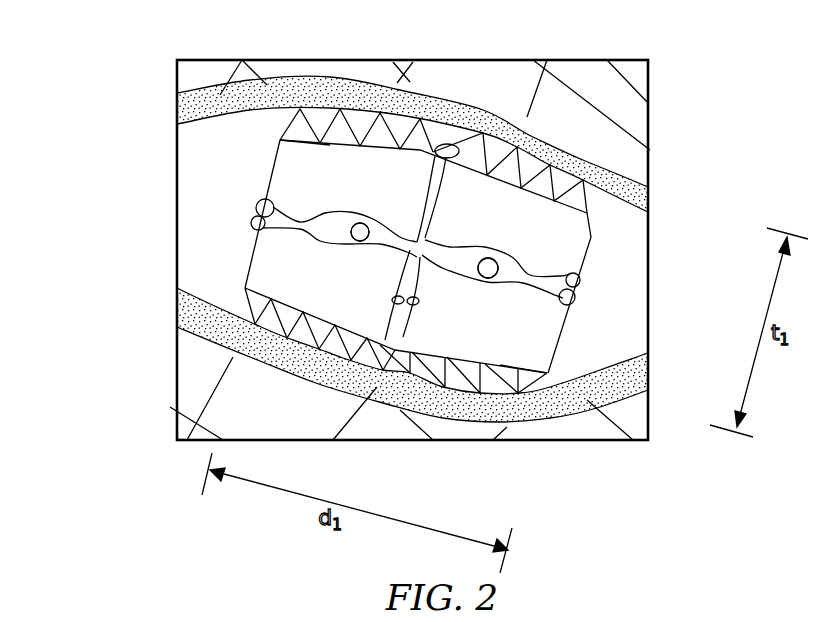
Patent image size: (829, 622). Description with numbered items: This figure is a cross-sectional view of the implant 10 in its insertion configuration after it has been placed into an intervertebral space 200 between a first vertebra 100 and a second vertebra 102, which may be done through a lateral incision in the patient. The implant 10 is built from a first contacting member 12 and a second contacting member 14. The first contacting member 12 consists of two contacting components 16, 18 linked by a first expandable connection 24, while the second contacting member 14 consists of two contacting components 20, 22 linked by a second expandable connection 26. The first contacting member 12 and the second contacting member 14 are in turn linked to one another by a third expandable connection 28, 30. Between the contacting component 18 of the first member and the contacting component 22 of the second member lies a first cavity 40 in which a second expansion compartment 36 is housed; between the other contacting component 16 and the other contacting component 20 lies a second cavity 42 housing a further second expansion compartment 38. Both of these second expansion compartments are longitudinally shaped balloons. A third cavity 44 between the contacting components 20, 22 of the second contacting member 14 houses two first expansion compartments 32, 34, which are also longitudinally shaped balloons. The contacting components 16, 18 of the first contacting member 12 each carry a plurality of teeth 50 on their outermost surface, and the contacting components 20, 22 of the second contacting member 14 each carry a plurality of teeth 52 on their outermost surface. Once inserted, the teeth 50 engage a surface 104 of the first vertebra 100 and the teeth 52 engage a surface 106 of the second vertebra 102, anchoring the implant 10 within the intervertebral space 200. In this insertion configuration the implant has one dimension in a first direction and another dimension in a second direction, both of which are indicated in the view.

The intervertebral space 200 is at (126, 139).
The implant 10 is at (185, 213).
The first contacting member 12 is at (612, 237).
The second contacting member 14 is at (576, 332).
The contacting component 16 is at (556, 235).
The contacting component 18 is at (300, 168).
The contacting component 20 is at (526, 348).
The contacting component 22 is at (263, 258).
The first expandable connection 24 is at (447, 143).
The second expandable connection 26 is at (392, 358).
The third expandable connection 28 is at (578, 293).
The third expandable connection 30 is at (258, 204).
The first expansion compartment 32 is at (393, 297).
The first expansion compartment 34 is at (418, 300).
The second expansion compartment 36 is at (361, 237).
The further second expansion compartment 38 is at (488, 270).
The first cavity 40 is at (357, 228).
The second cavity 42 is at (487, 256).
The third cavity 44 is at (340, 343).
The teeth 50 is at (358, 125).
The teeth 52 is at (283, 335).
The first vertebra 100 is at (583, 113).
The second vertebra 102 is at (575, 428).
The surface of the first vertebra 104 is at (652, 224).
The surface of the second vertebra 106 is at (628, 352).